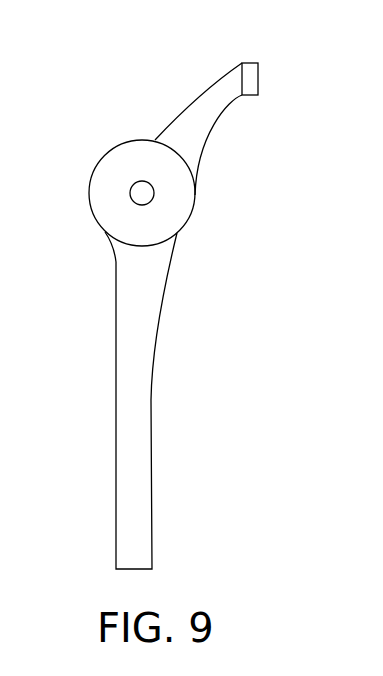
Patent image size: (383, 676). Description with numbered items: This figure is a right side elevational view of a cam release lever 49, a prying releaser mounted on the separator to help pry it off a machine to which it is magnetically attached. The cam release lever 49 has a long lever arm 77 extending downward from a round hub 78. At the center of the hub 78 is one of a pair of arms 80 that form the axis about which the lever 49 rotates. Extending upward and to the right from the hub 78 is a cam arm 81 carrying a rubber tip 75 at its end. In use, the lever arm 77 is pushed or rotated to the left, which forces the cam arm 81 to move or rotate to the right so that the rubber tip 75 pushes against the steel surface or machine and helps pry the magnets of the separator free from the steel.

The cam release lever 49 is at (90, 177).
The rubber tip 75 is at (258, 73).
The lever arm 77 is at (116, 432).
The hub 78 is at (102, 230).
The arm 80 is at (141, 181).
The cam arm 81 is at (214, 85).